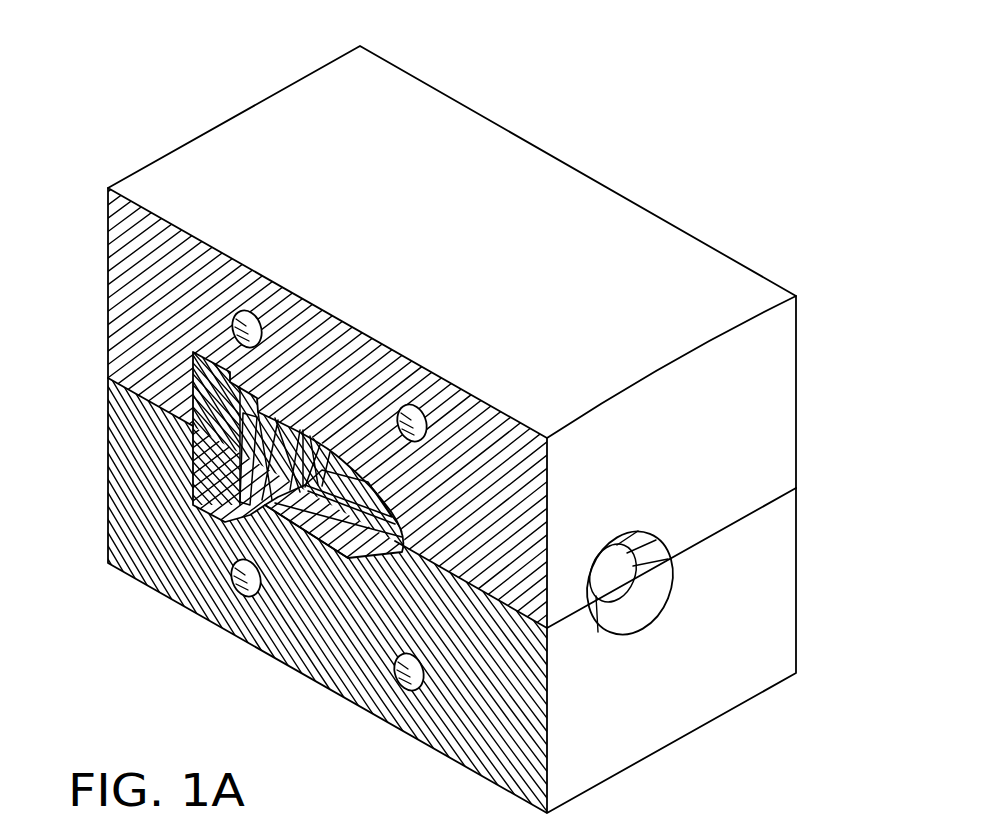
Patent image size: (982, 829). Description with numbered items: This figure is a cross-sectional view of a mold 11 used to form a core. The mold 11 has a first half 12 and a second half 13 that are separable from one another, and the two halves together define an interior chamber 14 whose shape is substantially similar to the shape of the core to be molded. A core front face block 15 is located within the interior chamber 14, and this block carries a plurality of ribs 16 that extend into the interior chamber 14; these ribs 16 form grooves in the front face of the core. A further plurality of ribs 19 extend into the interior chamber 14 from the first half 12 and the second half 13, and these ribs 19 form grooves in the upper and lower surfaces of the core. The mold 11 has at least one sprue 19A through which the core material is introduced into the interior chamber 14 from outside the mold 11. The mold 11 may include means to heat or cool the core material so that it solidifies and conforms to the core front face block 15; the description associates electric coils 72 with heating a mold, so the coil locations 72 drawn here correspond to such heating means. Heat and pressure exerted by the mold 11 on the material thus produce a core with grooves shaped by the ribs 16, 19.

The mold 11 is at (628, 180).
The first half 12 is at (774, 357).
The second half 13 is at (779, 568).
The interior chamber 14 is at (343, 487).
The core front face block 15 is at (193, 353).
The ribs 16 is at (255, 470).
The ribs 19 is at (357, 510).
The sprue 19A is at (623, 582).
The electric coils 72 is at (243, 328).